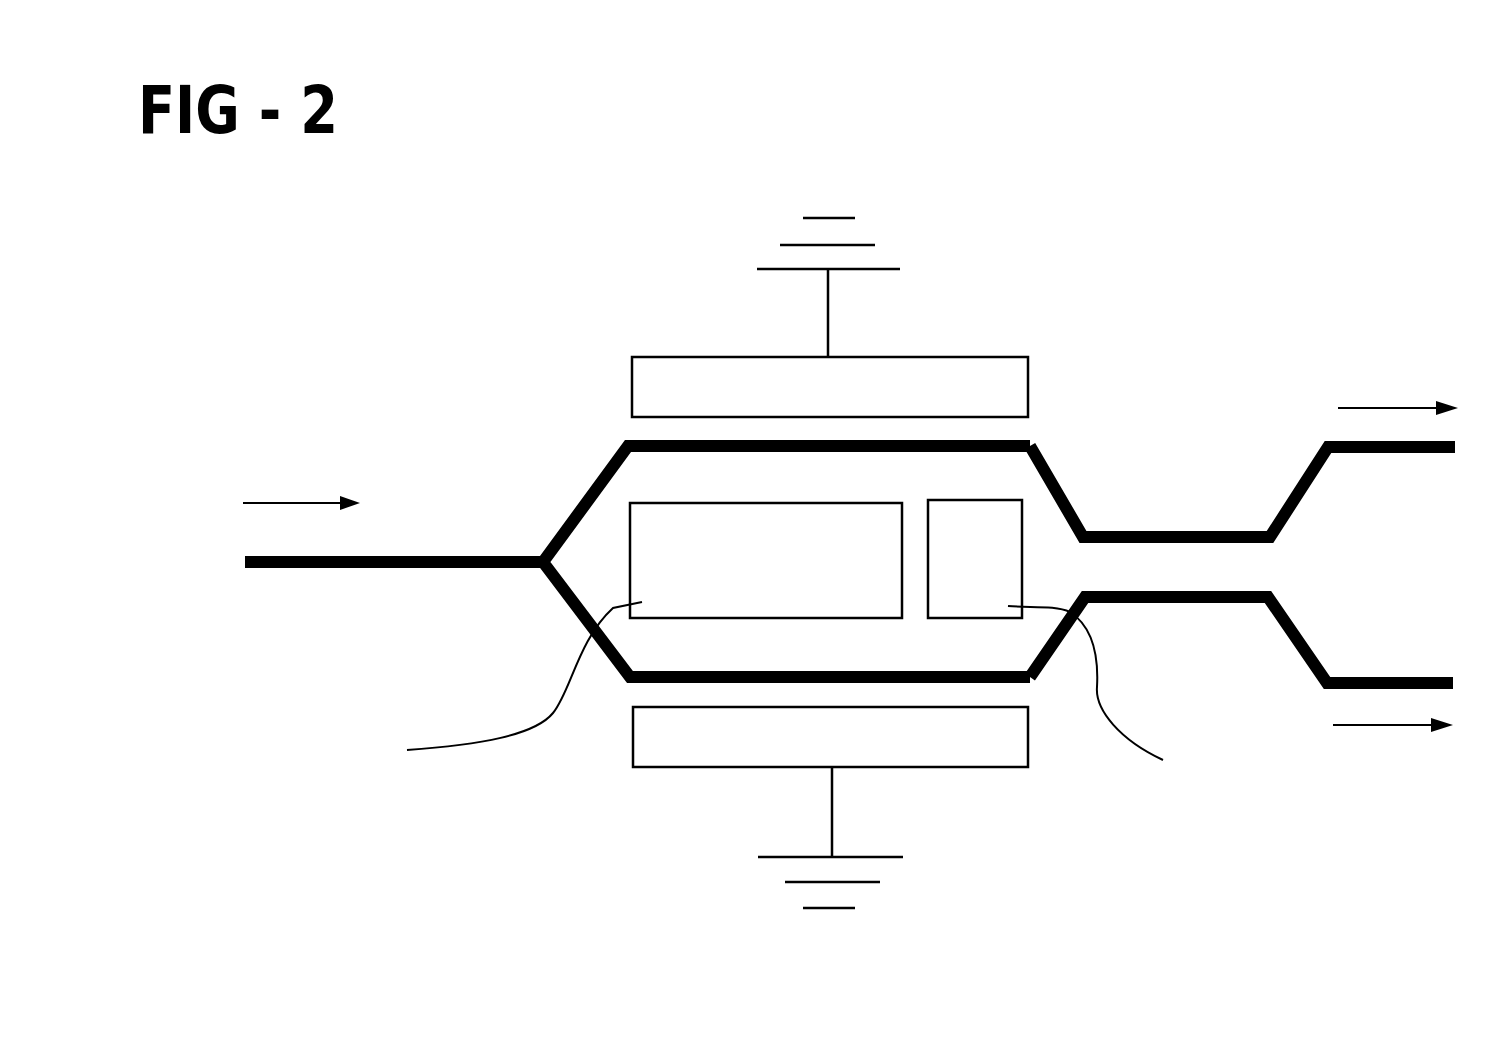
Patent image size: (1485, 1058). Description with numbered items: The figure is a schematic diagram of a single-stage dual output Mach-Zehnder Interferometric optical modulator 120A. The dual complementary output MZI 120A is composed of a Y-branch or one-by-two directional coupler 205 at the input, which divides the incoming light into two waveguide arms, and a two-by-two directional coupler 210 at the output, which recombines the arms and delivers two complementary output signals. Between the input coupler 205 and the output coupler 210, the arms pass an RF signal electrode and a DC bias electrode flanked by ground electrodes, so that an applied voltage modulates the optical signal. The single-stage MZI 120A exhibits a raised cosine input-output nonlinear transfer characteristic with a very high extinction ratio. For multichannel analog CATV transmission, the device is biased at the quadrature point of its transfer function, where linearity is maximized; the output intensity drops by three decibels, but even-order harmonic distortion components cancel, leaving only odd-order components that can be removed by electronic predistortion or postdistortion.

The single-stage dual output Mach-Zehnder Interferometric optical modulator 120A is at (855, 527).
The Y-branch or 1×2 directional coupler 205 is at (585, 497).
The 2×2 directional coupler 210 is at (1292, 493).